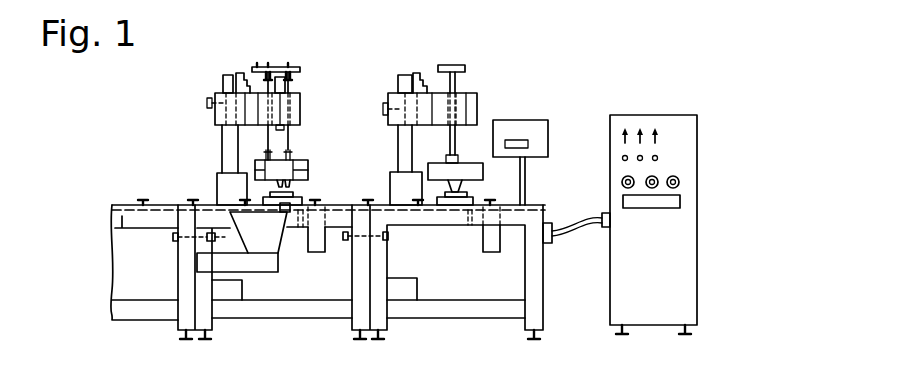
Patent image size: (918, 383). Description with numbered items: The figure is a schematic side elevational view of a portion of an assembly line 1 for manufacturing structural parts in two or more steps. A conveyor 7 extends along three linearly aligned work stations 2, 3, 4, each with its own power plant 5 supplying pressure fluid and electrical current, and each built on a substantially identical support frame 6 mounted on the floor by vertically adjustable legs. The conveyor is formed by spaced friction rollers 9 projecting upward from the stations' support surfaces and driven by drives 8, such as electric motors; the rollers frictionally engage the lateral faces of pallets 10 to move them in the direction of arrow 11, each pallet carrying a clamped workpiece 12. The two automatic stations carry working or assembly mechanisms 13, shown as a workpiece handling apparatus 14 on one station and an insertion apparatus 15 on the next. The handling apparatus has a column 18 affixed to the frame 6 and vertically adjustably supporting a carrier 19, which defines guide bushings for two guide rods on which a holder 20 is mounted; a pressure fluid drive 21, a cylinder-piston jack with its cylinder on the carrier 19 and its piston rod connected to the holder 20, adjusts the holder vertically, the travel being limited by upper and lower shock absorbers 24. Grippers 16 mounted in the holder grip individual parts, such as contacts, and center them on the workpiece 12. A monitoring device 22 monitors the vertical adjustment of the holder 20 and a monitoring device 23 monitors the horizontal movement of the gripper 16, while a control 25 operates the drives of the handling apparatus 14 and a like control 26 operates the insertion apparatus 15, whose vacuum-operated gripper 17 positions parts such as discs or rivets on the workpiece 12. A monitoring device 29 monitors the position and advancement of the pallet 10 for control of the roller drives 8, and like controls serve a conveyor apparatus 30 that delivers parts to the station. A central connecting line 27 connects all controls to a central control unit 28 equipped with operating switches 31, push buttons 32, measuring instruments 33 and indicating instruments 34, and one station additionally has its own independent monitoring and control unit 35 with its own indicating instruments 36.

The assembly line 1 is at (598, 58).
The work station 2 is at (126, 326).
The work station 3 is at (274, 327).
The work station 4 is at (446, 329).
The power plant 5 is at (225, 297).
The support frame 6 is at (118, 230).
The conveyor 7 is at (110, 203).
The drive 8 is at (317, 243).
The friction roller 9 is at (192, 203).
The pallet 10 is at (302, 200).
The arrow 11 is at (86, 210).
The workpiece 12 is at (292, 191).
The working or assembly mechanism 13 is at (223, 63).
The workpiece handling apparatus 14 is at (226, 78).
The insertion apparatus 15 is at (399, 88).
The gripper 16 is at (309, 174).
The vacuum-operated gripper 17 is at (455, 183).
The column 18 is at (227, 162).
The carrier 19 is at (215, 104).
The holder 20 is at (305, 163).
The pressure fluid drive 21 is at (285, 87).
The monitoring device 22 is at (257, 63).
The monitoring device 23 is at (262, 156).
The shock absorber 24 is at (272, 63).
The control 25 is at (240, 71).
The control 26 is at (425, 64).
The central connecting line 27 is at (572, 234).
The central control unit 28 is at (685, 238).
The monitoring device 29 is at (262, 240).
The conveyor apparatus 30 is at (258, 272).
The operating switch 31 is at (617, 133).
The push button 32 is at (621, 158).
The measuring instrument 33 is at (615, 187).
The indicating instrument 34 is at (672, 205).
The monitoring and control unit 35 is at (529, 113).
The indicating instrument 36 is at (529, 142).